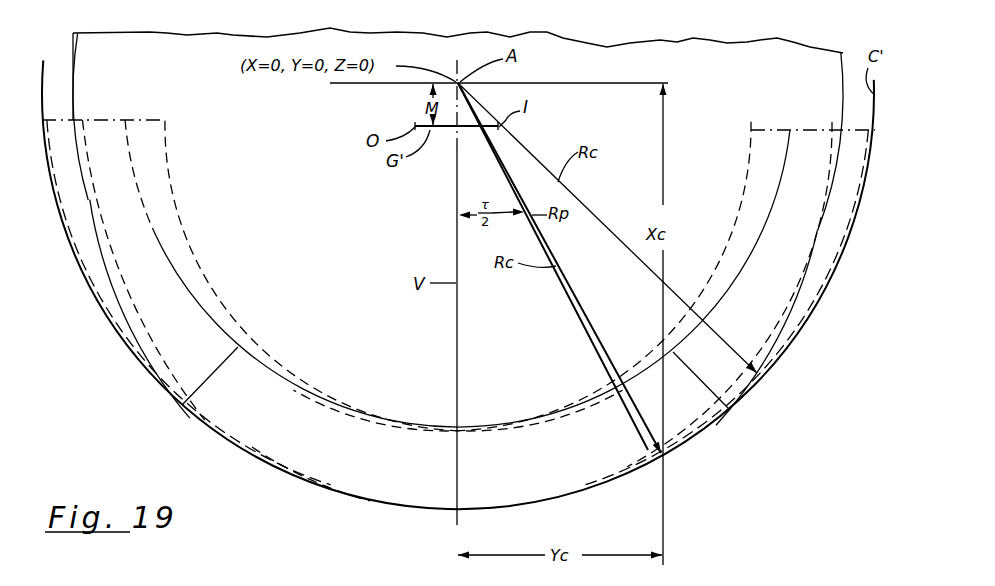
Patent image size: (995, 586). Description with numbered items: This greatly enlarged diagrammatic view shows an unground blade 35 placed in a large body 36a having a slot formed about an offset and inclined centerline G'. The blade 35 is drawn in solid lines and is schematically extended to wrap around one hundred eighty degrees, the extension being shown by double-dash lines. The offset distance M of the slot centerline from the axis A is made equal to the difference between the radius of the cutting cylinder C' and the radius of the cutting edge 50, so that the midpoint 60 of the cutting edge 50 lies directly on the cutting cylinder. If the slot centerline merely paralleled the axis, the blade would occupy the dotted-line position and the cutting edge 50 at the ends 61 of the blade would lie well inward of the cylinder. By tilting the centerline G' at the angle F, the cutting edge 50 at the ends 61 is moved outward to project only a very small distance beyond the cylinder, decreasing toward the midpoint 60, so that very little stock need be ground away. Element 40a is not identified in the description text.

The large body 36a is at (661, 49).
The blade profile 40a is at (845, 59).
The cutting edge 50 is at (572, 495).
The blade 35 is at (410, 488).
The midpoint 60 is at (458, 508).
The ends 61 is at (182, 405).